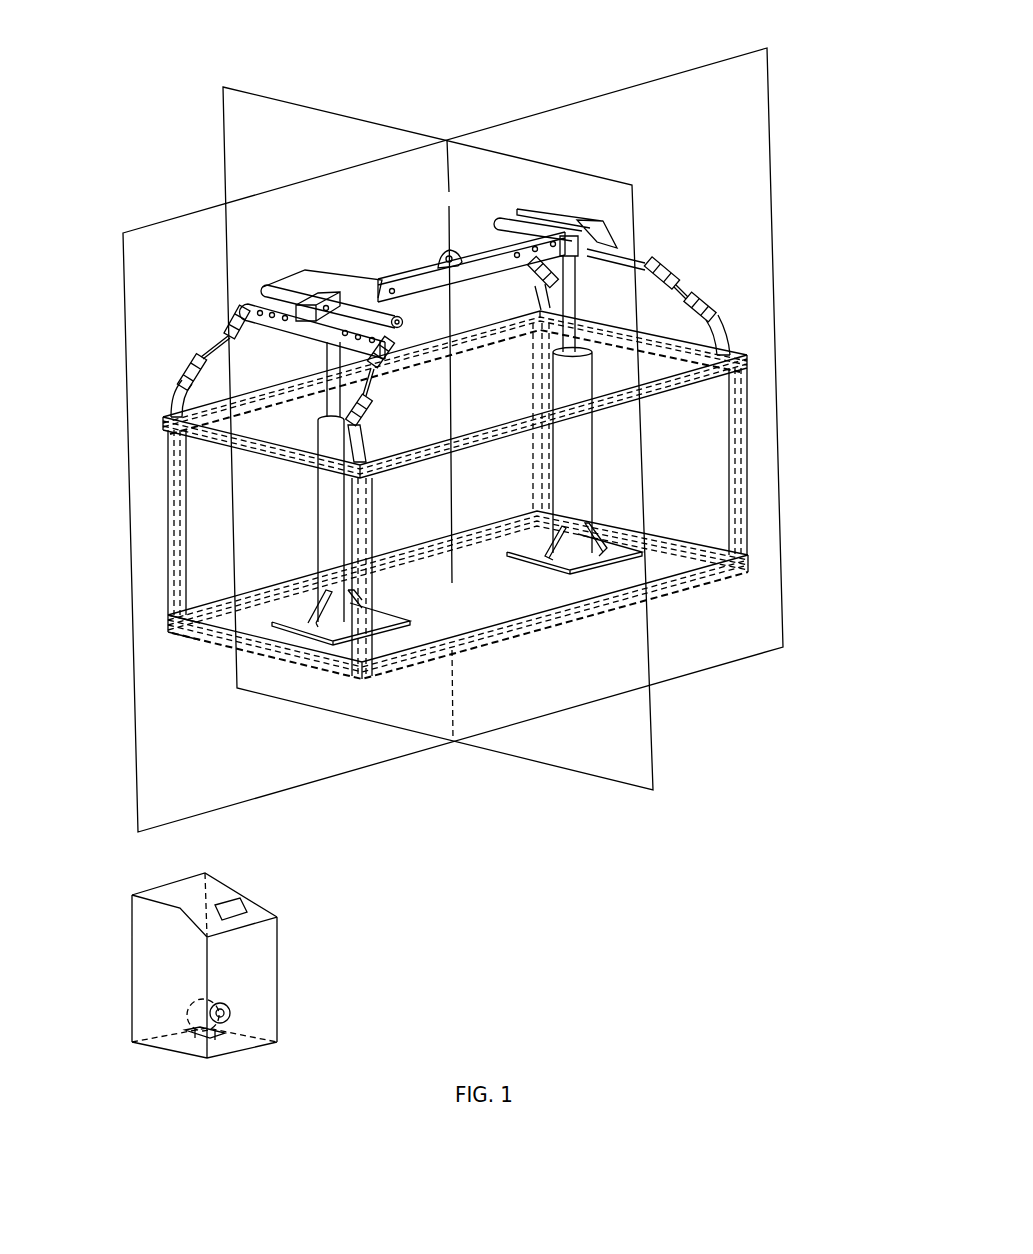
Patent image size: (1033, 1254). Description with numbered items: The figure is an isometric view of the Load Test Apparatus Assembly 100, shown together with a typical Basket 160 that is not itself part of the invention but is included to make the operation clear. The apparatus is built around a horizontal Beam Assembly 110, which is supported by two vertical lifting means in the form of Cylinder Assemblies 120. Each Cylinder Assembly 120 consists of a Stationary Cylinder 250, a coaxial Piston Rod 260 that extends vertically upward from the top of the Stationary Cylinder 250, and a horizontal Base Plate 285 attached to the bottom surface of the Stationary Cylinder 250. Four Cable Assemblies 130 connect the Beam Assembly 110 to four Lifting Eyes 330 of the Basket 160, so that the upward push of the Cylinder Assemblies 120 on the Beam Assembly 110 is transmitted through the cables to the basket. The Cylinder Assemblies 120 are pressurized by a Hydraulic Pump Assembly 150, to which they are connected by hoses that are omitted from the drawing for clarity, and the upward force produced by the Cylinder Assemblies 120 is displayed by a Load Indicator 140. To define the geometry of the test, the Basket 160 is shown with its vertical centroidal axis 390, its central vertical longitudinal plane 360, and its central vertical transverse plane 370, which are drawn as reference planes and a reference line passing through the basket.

The Load Test Apparatus Assembly 100 is at (394, 269).
The Beam Assembly 110 is at (467, 249).
The Cylinder Assembly 120 is at (330, 523).
The Cable Assembly 130 is at (215, 338).
The Load Indicator 140 is at (235, 900).
The Hydraulic Pump Assembly 150 is at (188, 1008).
The Basket 160 is at (500, 583).
The Stationary Cylinder 250 is at (318, 548).
The Piston Rod 260 is at (337, 363).
The Base Plate 285 is at (167, 623).
The Lifting Eye 330 is at (173, 393).
The central vertical longitudinal plane 360 is at (562, 106).
The central vertical transverse plane 370 is at (330, 110).
The vertical centroidal axis 390 is at (449, 203).